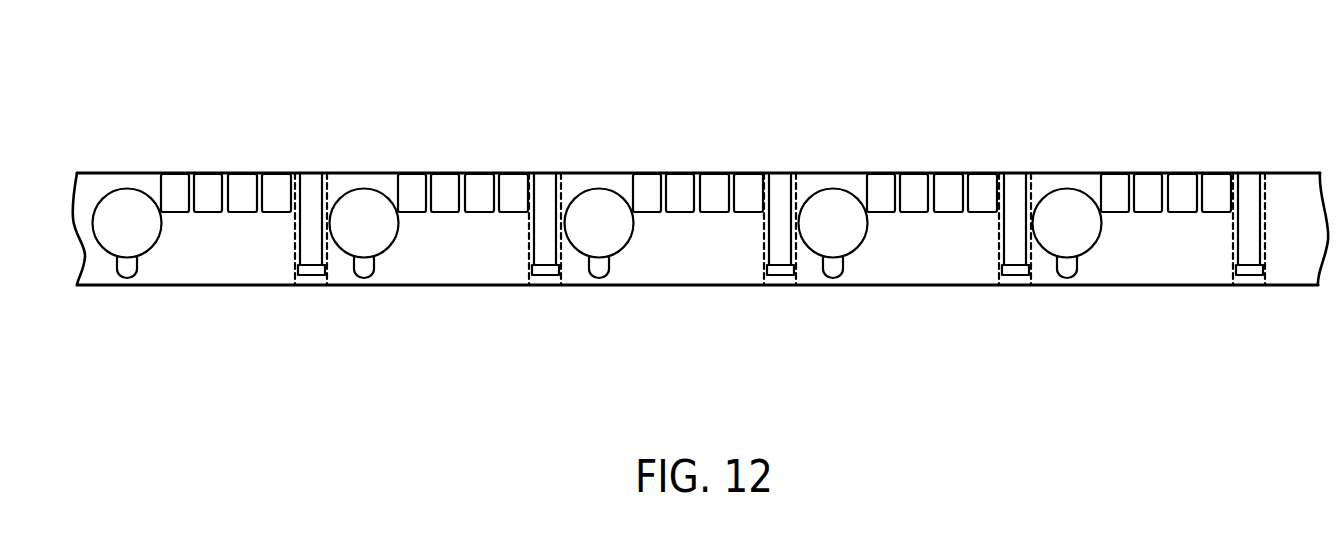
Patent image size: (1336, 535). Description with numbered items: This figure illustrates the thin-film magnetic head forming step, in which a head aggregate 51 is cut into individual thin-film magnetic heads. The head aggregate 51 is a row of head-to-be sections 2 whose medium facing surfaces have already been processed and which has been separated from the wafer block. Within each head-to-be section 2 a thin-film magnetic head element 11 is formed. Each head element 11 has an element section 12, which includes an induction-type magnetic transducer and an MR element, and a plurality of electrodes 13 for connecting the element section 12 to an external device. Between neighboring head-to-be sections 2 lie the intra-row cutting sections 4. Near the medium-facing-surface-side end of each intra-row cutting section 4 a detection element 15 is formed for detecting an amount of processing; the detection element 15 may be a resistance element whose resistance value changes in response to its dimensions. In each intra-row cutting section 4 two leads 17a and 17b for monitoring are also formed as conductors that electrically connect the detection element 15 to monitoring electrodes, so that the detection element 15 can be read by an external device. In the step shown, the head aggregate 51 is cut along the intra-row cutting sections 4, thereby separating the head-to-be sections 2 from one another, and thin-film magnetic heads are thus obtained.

The head-to-be section 2 is at (623, 173).
The intra-row cutting section 4 is at (307, 285).
The thin-film magnetic head element 11 is at (462, 52).
The element section 12 is at (367, 173).
The electrodes 13 is at (507, 172).
The detection element 15 is at (531, 267).
The lead for monitoring 17a is at (530, 233).
The lead for monitoring 17b is at (565, 188).
The head aggregate 51 is at (110, 173).